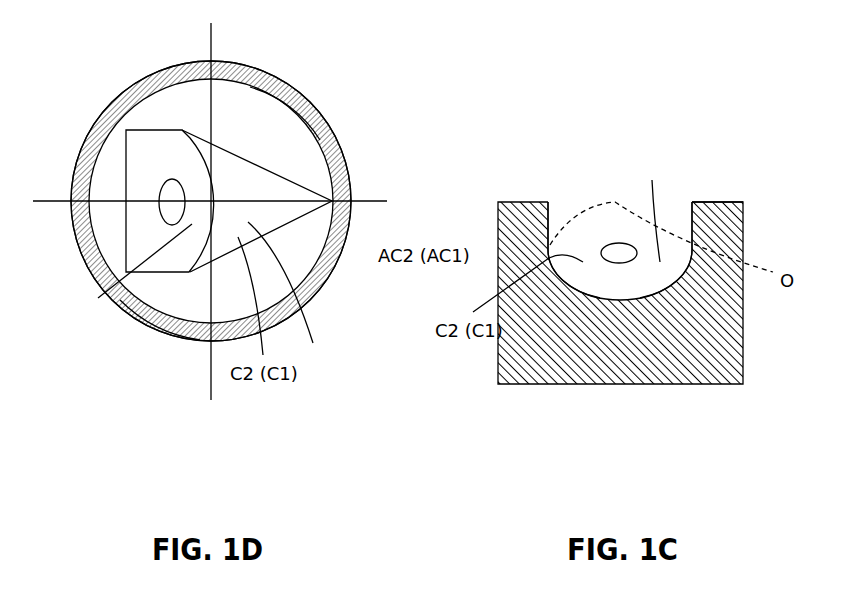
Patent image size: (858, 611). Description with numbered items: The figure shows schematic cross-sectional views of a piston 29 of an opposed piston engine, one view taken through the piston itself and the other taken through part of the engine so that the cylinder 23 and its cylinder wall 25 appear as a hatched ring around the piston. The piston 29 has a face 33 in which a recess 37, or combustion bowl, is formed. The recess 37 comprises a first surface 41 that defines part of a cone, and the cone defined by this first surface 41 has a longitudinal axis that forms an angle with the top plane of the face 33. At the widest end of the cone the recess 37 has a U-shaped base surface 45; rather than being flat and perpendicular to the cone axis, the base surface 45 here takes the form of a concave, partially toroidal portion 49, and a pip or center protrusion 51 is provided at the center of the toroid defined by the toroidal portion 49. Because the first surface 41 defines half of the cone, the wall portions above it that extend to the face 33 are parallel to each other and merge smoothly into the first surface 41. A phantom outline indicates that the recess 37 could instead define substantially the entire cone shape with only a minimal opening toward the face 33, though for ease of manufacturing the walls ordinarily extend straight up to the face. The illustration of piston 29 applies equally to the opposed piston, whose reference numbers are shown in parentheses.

In FIG. 1D, the cylinder 23 is at (265, 77).
In FIG. 1D, the cylinder wall 25 is at (306, 126).
In FIG. 1D, the piston 29 is at (183, 115).
In FIG. 1C, the piston 29 is at (555, 365).
In FIG. 1D, the center protrusion 51 is at (172, 180).
In FIG. 1C, the center protrusion 51 is at (618, 243).
In FIG. 1D, the base surface 45 is at (143, 173).
In FIG. 1C, the base surface 45 is at (577, 242).
In FIG. 1D, the recess 37 is at (277, 185).
In FIG. 1C, the recess 37 is at (572, 207).
In FIG. 1D, the toroidal portion 49 is at (112, 270).
In FIG. 1C, the toroidal portion 49 is at (663, 208).
In FIG. 1D, the face 33 is at (185, 302).
In FIG. 1C, the face 33 is at (732, 202).
In FIG. 1D, the first surface 41 is at (311, 291).
In FIG. 1C, the first surface 41 is at (667, 285).